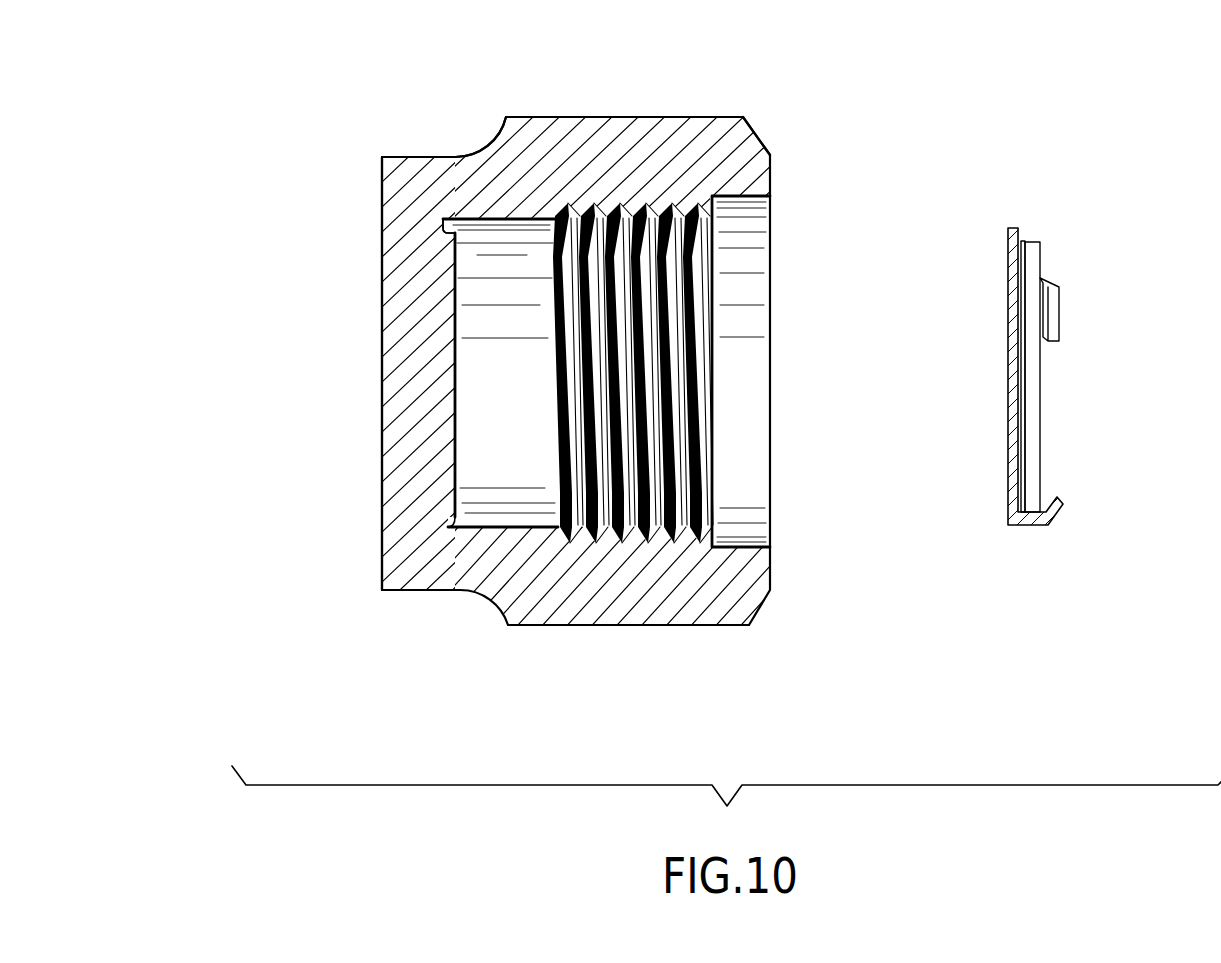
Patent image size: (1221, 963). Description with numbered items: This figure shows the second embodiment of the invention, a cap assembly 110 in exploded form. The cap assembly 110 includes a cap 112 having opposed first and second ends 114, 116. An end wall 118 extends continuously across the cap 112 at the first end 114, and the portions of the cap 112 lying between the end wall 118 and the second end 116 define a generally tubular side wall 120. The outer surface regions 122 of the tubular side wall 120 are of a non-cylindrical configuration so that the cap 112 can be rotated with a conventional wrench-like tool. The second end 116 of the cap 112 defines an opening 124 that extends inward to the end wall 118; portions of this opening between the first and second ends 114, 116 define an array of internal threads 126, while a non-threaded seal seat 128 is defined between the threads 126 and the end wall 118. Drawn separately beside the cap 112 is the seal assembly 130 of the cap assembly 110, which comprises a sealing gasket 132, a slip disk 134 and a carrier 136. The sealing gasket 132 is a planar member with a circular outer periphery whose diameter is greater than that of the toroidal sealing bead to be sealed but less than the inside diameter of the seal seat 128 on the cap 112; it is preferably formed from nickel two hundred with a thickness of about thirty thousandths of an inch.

The cap assembly 110 is at (717, 660).
The cap 112 is at (542, 641).
The first end 114 is at (381, 191).
The second end 116 is at (770, 178).
The end wall 118 is at (381, 357).
The tubular side wall 120 is at (562, 106).
The outer surface regions 122 is at (507, 116).
The opening 124 is at (742, 495).
The internal threads 126 is at (710, 227).
The seal seat 128 is at (520, 221).
The seal assembly 130 is at (1067, 368).
The sealing gasket 132 is at (1029, 243).
The slip disk 134 is at (1023, 241).
The carrier 136 is at (1014, 227).